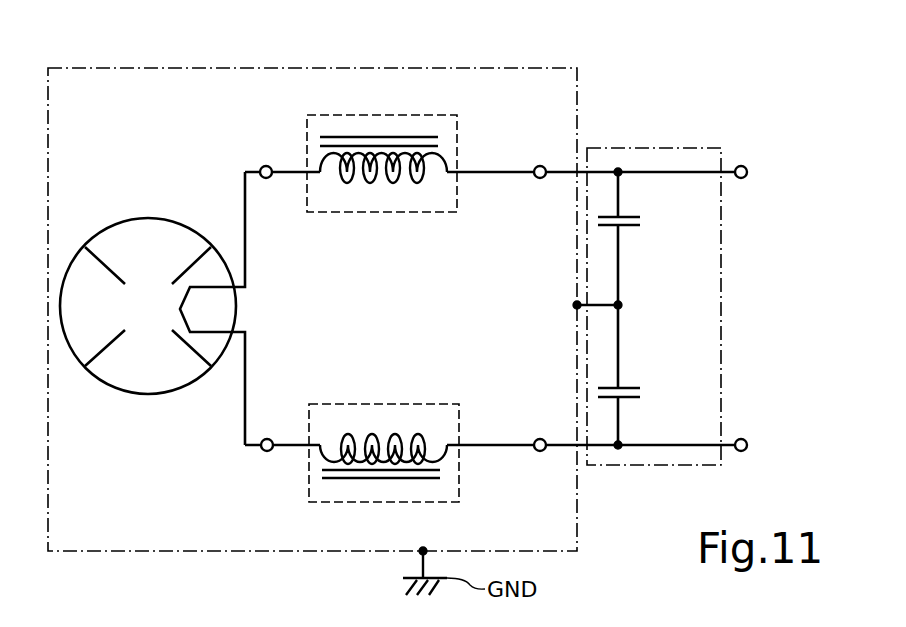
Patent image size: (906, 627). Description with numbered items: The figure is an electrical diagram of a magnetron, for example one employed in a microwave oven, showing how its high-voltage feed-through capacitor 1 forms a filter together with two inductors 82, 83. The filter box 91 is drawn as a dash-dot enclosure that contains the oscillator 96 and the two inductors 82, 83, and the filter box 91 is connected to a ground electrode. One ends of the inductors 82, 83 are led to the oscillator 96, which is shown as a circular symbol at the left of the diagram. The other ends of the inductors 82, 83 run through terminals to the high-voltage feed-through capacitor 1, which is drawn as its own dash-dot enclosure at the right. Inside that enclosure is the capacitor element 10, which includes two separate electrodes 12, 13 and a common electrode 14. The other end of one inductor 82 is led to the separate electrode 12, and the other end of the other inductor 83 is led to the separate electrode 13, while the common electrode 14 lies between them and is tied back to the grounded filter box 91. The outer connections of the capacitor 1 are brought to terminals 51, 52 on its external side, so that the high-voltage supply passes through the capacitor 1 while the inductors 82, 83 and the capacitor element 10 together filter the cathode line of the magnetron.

The high-voltage feed-through capacitor 1 is at (658, 148).
The capacitor element 10 is at (668, 300).
The separate electrode 12 is at (632, 215).
The separate electrode 13 is at (632, 399).
The common electrode 14 is at (632, 227).
The terminal 51 is at (748, 170).
The terminal 52 is at (748, 443).
The inductor 82 is at (367, 115).
The inductor 83 is at (368, 404).
The filter box 91 is at (217, 68).
The oscillator 96 is at (140, 218).